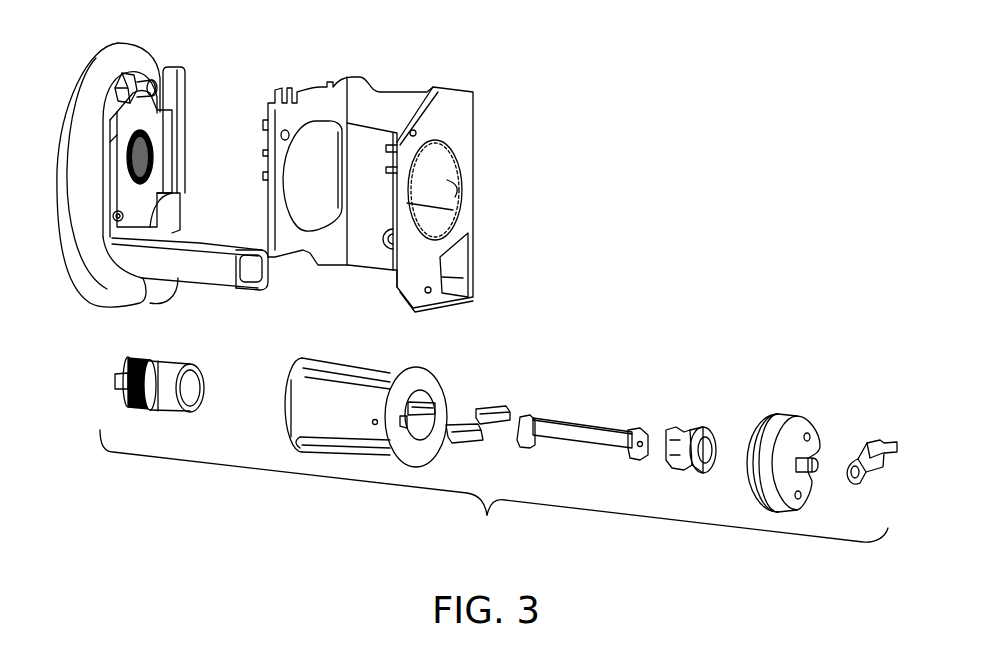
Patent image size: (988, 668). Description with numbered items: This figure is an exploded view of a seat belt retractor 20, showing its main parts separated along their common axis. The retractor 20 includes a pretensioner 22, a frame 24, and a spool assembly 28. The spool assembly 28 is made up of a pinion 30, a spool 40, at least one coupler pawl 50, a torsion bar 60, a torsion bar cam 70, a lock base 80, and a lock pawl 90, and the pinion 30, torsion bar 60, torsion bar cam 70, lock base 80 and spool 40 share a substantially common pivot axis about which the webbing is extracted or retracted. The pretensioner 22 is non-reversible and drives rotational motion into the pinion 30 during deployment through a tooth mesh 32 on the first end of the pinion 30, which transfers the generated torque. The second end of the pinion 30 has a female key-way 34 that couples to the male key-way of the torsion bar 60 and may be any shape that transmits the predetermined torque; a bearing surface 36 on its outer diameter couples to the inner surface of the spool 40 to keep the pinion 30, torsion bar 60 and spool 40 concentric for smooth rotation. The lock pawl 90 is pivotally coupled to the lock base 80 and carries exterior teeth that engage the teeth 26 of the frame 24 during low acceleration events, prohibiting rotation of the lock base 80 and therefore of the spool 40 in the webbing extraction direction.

The retractor 20 is at (614, 188).
The pretensioner 22 is at (119, 48).
The frame 24 is at (394, 110).
The teeth 26 is at (457, 205).
The spool assembly 28 is at (494, 488).
The pinion 30 is at (118, 367).
The tooth mesh 32 is at (139, 357).
The female key-way 34 is at (188, 388).
The bearing surface 36 is at (176, 372).
The spool 40 is at (363, 368).
The coupler pawl 50 is at (489, 408).
The torsion bar 60 is at (594, 434).
The torsion bar cam 70 is at (693, 437).
The lock base 80 is at (800, 426).
The lock pawl 90 is at (883, 443).